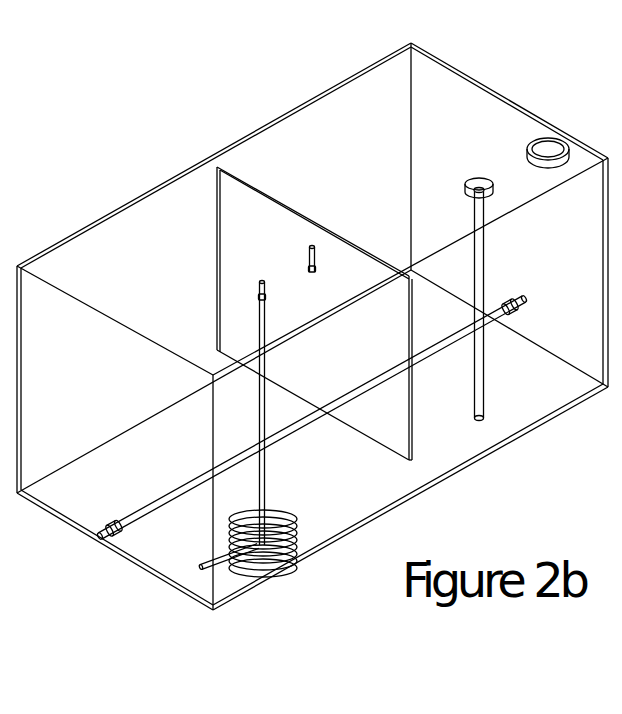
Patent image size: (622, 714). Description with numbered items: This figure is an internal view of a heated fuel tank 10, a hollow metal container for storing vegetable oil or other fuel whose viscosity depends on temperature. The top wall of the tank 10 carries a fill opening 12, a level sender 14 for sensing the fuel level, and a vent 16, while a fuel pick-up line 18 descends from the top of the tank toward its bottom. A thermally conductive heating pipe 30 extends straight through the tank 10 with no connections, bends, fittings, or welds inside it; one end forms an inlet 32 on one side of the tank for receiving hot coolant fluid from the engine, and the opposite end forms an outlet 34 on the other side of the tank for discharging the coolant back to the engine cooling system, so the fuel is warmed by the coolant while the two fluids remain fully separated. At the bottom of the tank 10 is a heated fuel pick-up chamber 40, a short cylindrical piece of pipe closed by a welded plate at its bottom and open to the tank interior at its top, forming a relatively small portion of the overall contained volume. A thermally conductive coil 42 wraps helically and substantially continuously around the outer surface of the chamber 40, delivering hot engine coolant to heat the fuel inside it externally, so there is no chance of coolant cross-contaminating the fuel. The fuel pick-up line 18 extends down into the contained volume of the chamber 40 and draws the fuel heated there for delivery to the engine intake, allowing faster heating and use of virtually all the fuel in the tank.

The heated fuel tank 10 is at (129, 133).
The fill opening 12 is at (556, 143).
The level sender 14 is at (470, 185).
The vent 16 is at (316, 250).
The fuel pick-up line 18 is at (259, 292).
The heating pipe 30 is at (162, 497).
The inlet 32 is at (106, 544).
The outlet 34 is at (532, 306).
The heated fuel pick-up chamber 40 is at (279, 514).
The thermally conductive coil 42 is at (284, 575).